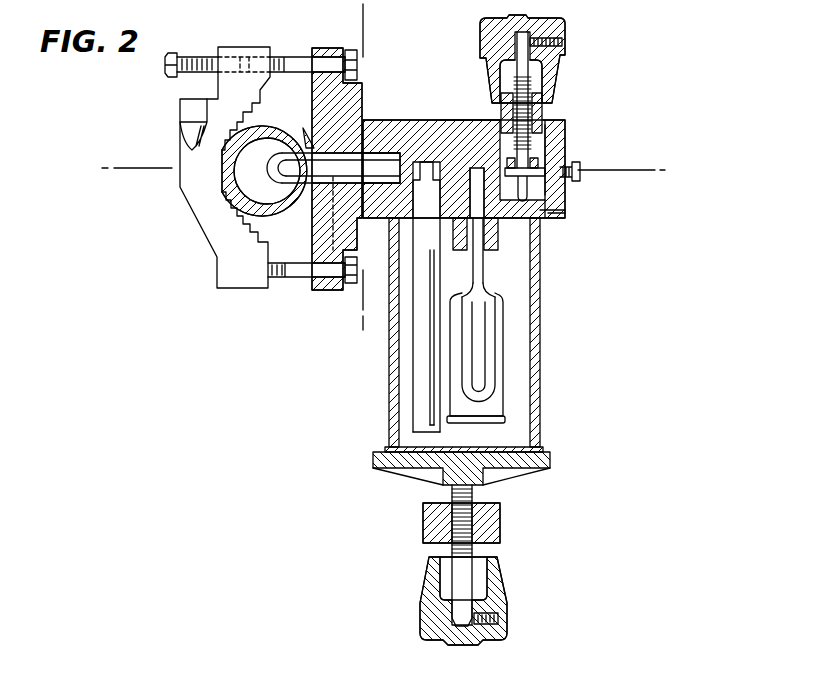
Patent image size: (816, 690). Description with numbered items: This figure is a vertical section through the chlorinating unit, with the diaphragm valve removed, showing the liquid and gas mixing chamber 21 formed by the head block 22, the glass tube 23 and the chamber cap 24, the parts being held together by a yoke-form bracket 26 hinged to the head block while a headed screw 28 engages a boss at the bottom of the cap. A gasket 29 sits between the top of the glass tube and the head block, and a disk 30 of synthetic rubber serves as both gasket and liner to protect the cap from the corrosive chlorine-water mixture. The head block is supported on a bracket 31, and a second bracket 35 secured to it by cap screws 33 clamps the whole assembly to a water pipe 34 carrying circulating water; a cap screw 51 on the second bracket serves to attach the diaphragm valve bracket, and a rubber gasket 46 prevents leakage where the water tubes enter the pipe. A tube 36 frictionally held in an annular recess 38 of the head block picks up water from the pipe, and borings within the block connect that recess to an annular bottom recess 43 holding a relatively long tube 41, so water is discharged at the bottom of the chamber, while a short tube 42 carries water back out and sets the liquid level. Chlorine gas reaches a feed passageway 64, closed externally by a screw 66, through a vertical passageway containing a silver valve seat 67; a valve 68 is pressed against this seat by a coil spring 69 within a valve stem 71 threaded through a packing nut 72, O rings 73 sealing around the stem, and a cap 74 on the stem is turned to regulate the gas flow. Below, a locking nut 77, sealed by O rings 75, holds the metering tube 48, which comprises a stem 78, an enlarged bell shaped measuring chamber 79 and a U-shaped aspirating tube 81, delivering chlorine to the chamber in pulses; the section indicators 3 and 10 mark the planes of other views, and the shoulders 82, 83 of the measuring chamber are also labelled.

The section line 3- 3 is at (364, 300).
The section line 10- 10 is at (643, 168).
The liquid and gas mixing chamber 21 is at (518, 373).
The head block 22 is at (567, 188).
The glass tube 23 is at (535, 412).
The chamber cap 24 is at (550, 462).
The bracket 26 is at (500, 523).
The headed screw 28 is at (493, 594).
The gasket 29 is at (545, 226).
The disk 30 is at (405, 450).
The bracket 31 is at (337, 289).
The cap screws 33 is at (293, 278).
The water pipe 34 is at (278, 216).
The second bracket 35 is at (227, 270).
The tube 36 is at (268, 170).
The annular recess 38 is at (400, 175).
The relatively long tube 41 is at (433, 426).
The short tube 42 is at (413, 238).
The annular bottom recess 43 is at (430, 185).
The rubber gasket 46 is at (313, 145).
The metering tube 48 is at (453, 353).
The cap screw 51 is at (166, 73).
The feed passageway 64 is at (548, 165).
The screw 66 is at (576, 168).
The valve seat 67 is at (566, 214).
The valve 68 is at (548, 152).
The coil spring 69 is at (497, 128).
The valve stem 71 is at (515, 125).
The packing nut 72 is at (536, 125).
The O rings 73 is at (546, 135).
The cap 74 is at (562, 25).
The O rings 75 is at (496, 244).
The locking nut 77 is at (491, 247).
The stem 78 is at (472, 256).
The bell shaped measuring chamber 79 is at (478, 420).
The U-shaped aspirating tube 81 is at (489, 331).
The shoulder 82 is at (465, 293).
The shoulder 83 is at (495, 297).